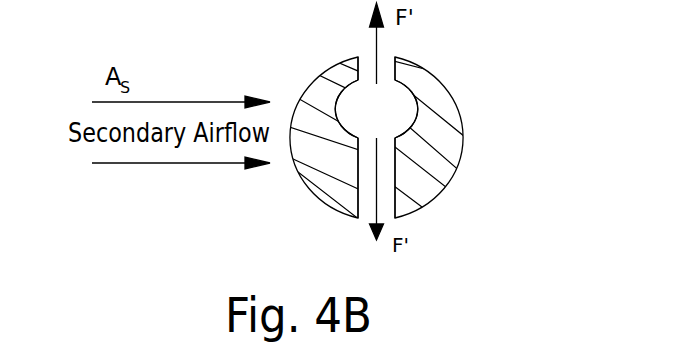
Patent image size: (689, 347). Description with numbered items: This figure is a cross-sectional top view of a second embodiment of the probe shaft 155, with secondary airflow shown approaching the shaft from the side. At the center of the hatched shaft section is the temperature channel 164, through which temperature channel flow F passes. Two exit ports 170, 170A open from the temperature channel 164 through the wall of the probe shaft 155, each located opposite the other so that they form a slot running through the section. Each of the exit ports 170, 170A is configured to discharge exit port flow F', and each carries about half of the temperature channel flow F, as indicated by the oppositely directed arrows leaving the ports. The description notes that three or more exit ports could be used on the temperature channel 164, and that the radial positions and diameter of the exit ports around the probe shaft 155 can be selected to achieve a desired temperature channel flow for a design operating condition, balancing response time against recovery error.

The probe shaft 155 is at (458, 99).
The temperature channel 164 is at (395, 123).
The exit port 170 is at (369, 72).
The exit port 170A is at (368, 212).